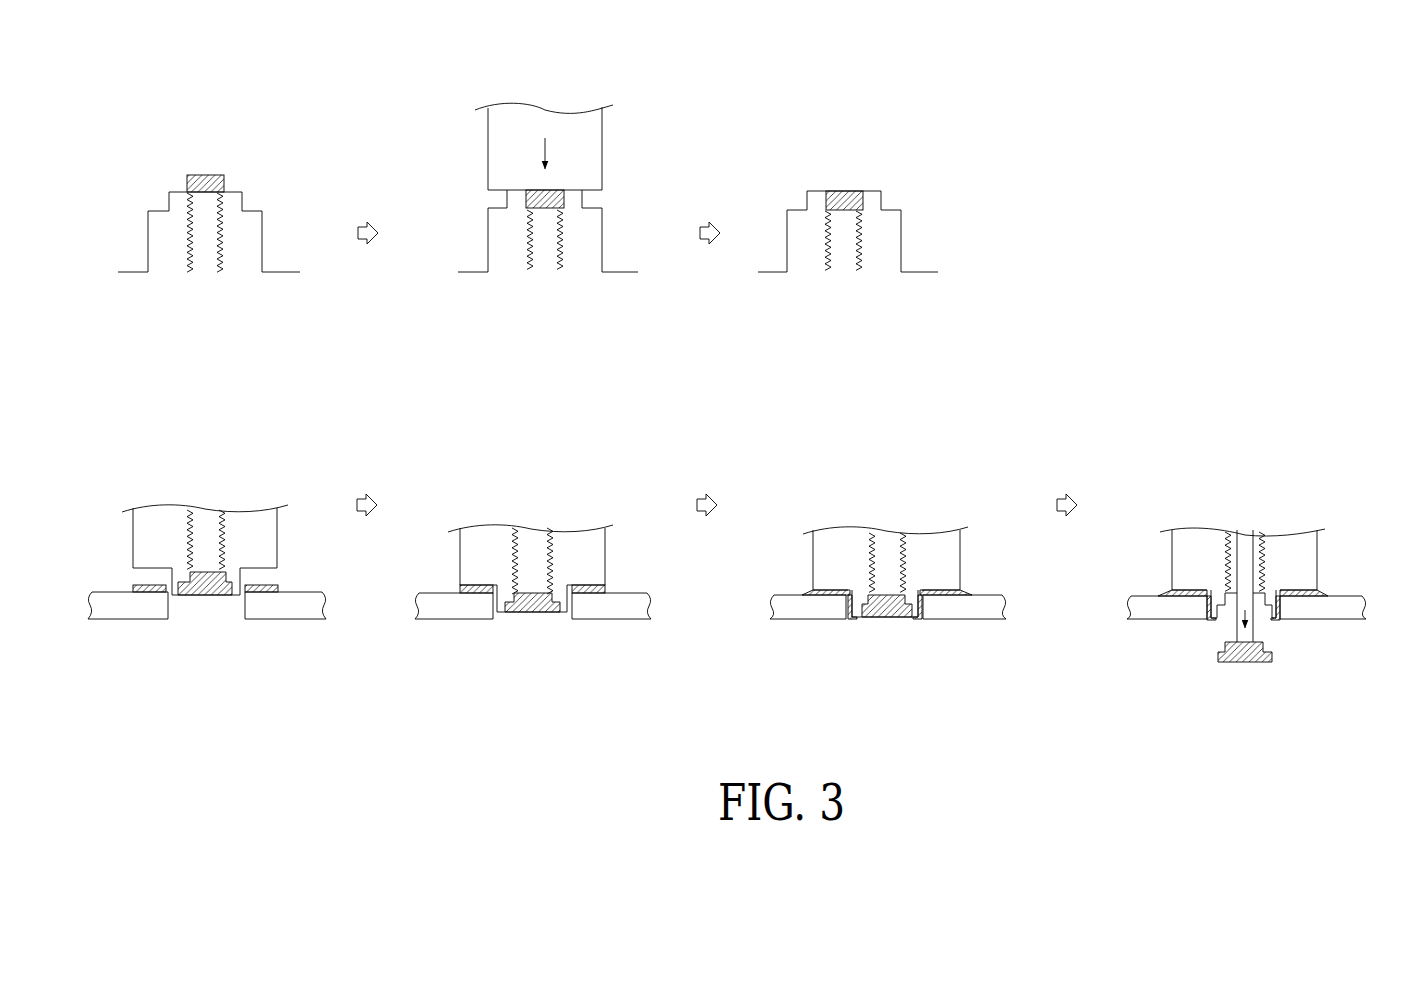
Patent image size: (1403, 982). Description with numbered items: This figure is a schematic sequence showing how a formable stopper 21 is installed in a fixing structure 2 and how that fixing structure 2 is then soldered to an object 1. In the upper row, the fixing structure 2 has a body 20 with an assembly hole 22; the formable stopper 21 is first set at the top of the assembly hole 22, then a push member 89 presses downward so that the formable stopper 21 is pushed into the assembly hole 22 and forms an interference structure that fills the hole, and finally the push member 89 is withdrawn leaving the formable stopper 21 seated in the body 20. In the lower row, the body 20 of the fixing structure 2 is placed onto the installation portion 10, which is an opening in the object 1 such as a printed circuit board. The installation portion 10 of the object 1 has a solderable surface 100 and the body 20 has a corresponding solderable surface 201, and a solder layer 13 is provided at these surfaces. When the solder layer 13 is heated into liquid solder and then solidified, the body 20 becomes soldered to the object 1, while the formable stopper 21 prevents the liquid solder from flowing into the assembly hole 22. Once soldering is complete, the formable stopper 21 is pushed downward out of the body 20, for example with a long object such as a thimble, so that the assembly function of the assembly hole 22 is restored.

The object 1 is at (290, 618).
The fixing structure 2 is at (66, 465).
The installation portion 10 is at (231, 624).
The solder layer 13 is at (267, 585).
The body 20 is at (152, 236).
The formable stopper 21 is at (210, 178).
The assembly hole 22 is at (207, 266).
The push member 89 is at (595, 148).
The solderable surface 100 is at (150, 592).
The corresponding solderable surface 201 is at (163, 567).